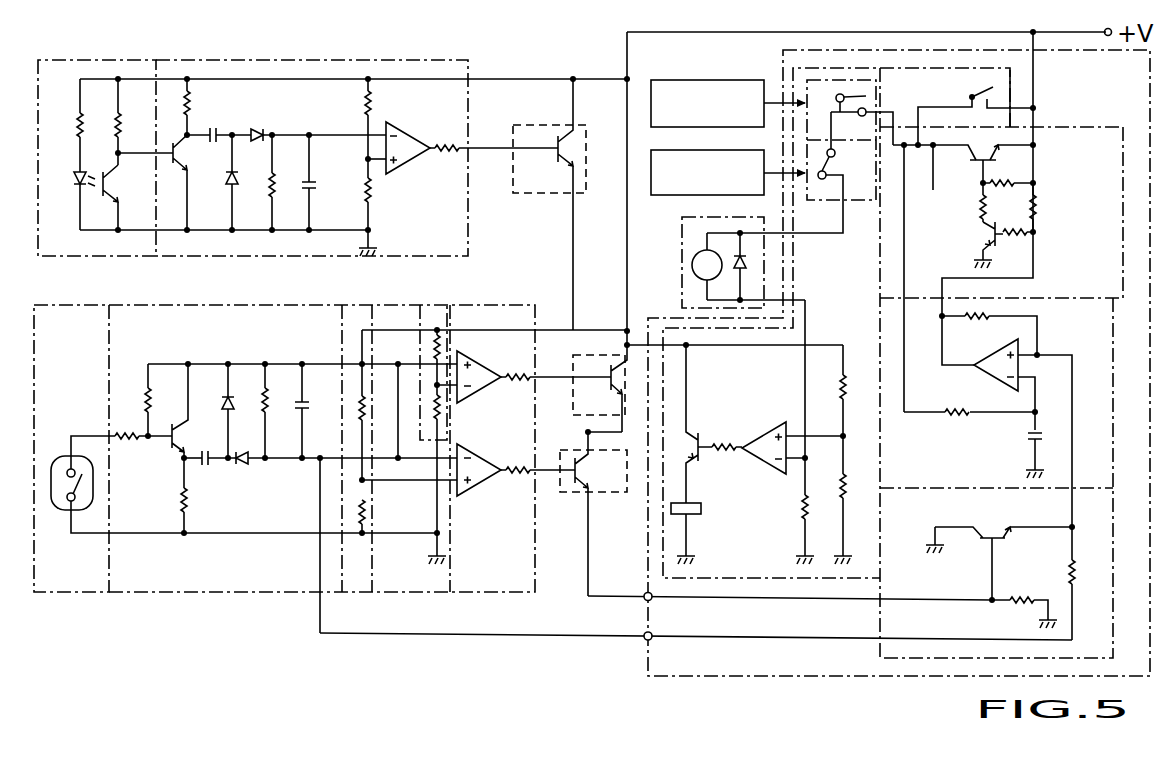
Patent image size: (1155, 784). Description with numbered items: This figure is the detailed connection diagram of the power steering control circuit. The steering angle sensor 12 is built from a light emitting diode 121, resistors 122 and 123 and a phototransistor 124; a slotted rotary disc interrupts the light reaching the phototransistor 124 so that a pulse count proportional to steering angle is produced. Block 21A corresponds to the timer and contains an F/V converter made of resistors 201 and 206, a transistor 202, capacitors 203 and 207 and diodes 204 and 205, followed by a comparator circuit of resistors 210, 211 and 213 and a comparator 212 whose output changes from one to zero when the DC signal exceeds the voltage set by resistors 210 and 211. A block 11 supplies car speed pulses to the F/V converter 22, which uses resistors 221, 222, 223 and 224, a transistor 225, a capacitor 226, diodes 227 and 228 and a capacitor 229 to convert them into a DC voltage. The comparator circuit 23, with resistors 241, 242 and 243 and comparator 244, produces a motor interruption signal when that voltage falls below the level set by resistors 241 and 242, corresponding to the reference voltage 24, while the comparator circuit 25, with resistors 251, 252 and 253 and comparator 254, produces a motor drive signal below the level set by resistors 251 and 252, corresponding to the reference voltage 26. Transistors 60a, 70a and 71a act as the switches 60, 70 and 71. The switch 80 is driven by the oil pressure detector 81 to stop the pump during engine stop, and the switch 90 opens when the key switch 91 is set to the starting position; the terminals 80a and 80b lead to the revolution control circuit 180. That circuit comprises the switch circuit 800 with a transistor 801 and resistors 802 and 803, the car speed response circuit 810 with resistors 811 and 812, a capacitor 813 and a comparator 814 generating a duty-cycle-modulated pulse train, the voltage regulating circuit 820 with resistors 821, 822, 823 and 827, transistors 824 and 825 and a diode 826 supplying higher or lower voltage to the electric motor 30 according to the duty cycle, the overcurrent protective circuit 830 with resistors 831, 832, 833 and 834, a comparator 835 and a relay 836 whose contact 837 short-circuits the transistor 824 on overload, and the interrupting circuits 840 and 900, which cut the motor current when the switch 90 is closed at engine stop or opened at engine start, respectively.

The switch unit 11 is at (62, 304).
The steering angle sensor 12 is at (85, 58).
The timer block 21A is at (300, 60).
The F/V converter 22 is at (155, 304).
The comparator circuit 23 is at (388, 308).
The reference voltage 24 is at (358, 308).
The comparator circuit 25 is at (473, 307).
The reference voltage 26 is at (433, 308).
The electric motor 30 is at (672, 248).
The switch 60 is at (574, 493).
The transistor 60a is at (589, 477).
The switch 70 is at (588, 153).
The transistor 70a is at (558, 158).
The switch 71 is at (580, 434).
The transistor 71a is at (614, 388).
The switch 80 is at (840, 96).
The output terminal 80a is at (790, 585).
The output terminal 80b is at (696, 624).
The oil pressure detector 81 is at (692, 80).
The switch 90 is at (835, 170).
The key switch 91 is at (668, 195).
The light emitting diode 121 is at (74, 176).
The resistor 122 is at (78, 122).
The resistor 123 is at (119, 134).
The phototransistor 124 is at (112, 186).
The revolution control circuit 180 is at (882, 50).
The resistor 201 is at (190, 100).
The transistor 202 is at (178, 152).
The capacitor 203 is at (217, 130).
The diode 204 is at (238, 183).
The diode 205 is at (260, 133).
The resistor 206 is at (275, 187).
The capacitor 207 is at (316, 185).
The resistor 210 is at (372, 106).
The resistor 211 is at (372, 198).
The comparator 212 is at (412, 134).
The resistor 213 is at (443, 155).
The resistor 221 is at (128, 440).
The resistor 222 is at (145, 392).
The resistor 223 is at (180, 502).
The resistor 224 is at (270, 406).
The transistor 225 is at (170, 428).
The capacitor 226 is at (207, 465).
The diode 227 is at (236, 406).
The diode 228 is at (248, 465).
The capacitor 229 is at (308, 406).
The resistor 241 is at (356, 408).
The resistor 242 is at (368, 512).
The resistor 243 is at (514, 478).
The comparator 244 is at (467, 495).
The resistor 251 is at (432, 349).
The resistor 252 is at (447, 407).
The resistor 253 is at (517, 385).
The comparator 254 is at (492, 364).
The switch circuit 800 is at (1115, 600).
The transistor 801 is at (985, 553).
The resistor 802 is at (1022, 598).
The resistor 803 is at (1072, 574).
The car speed response circuit 810 is at (1115, 376).
The resistor 811 is at (982, 318).
The resistor 812 is at (960, 418).
The capacitor 813 is at (1030, 434).
The comparator 814 is at (972, 374).
The voltage regulating circuit 820 is at (1093, 127).
The resistor 821 is at (1012, 183).
The resistor 822 is at (1040, 212).
The resistor 823 is at (978, 207).
The transistor 824 is at (978, 163).
The transistor 825 is at (985, 234).
The diode 826 is at (752, 268).
The resistor 827 is at (1025, 236).
The overcurrent protective circuit 830 is at (793, 240).
The resistor 831 is at (848, 392).
The resistor 832 is at (850, 487).
The resistor 833 is at (797, 508).
The resistor 834 is at (716, 442).
The comparator 835 is at (766, 470).
The relay 836 is at (702, 510).
The contact 837 is at (970, 95).
The interrupting circuit 840 is at (876, 85).
The interrupting circuit 900 is at (838, 205).